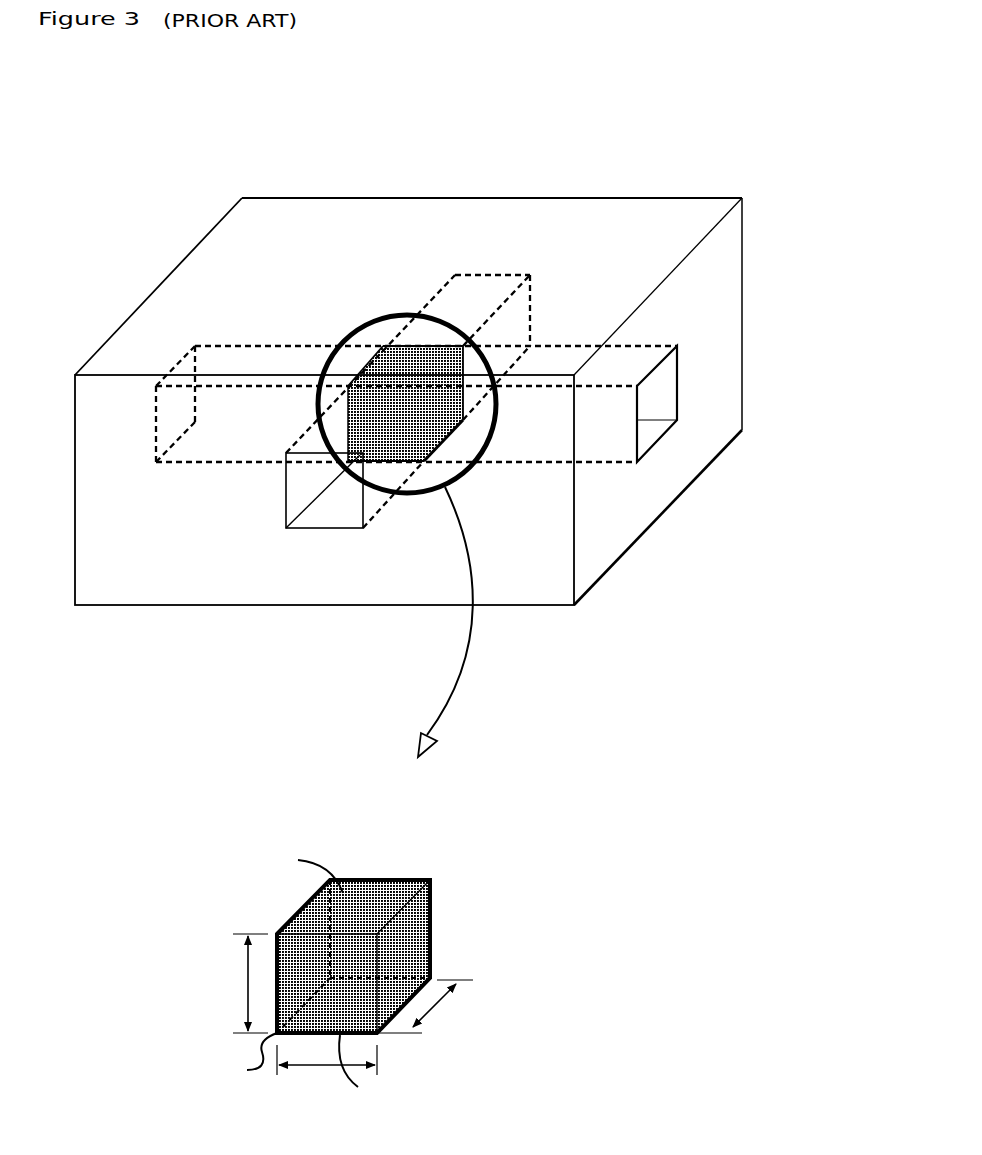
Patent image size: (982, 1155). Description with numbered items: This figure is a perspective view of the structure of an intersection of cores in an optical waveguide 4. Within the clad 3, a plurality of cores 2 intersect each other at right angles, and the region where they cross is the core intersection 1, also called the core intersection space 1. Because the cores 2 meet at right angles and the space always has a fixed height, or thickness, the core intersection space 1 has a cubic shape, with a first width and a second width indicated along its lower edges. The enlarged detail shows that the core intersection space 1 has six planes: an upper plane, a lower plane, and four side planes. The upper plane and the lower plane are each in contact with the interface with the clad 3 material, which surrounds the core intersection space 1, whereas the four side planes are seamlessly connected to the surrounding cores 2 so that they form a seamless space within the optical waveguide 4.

The core intersection space 1 is at (433, 832).
The core 2 is at (416, 327).
The clad 3 is at (571, 223).
The optical waveguide 4 is at (409, 442).